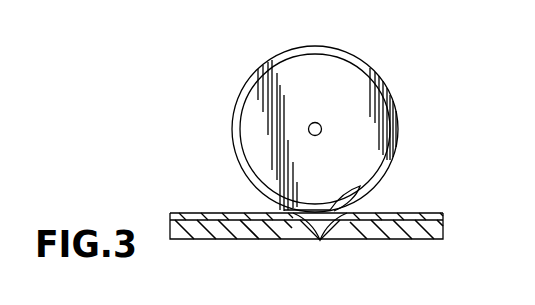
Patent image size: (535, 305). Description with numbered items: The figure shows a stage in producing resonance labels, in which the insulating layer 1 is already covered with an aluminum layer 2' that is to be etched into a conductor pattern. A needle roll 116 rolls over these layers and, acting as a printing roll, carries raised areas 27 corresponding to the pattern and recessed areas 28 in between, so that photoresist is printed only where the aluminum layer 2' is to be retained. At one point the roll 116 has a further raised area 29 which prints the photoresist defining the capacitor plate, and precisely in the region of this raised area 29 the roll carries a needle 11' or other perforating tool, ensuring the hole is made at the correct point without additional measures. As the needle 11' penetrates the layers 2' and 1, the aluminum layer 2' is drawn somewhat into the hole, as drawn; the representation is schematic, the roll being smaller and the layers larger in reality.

The insulating layer 1 is at (443, 239).
The aluminum layer 2' is at (316, 200).
The needle 11' is at (314, 246).
The raised areas 27 is at (237, 103).
The recessed areas 28 is at (383, 80).
The raised area 29 is at (362, 187).
The needle roll 116 is at (395, 112).